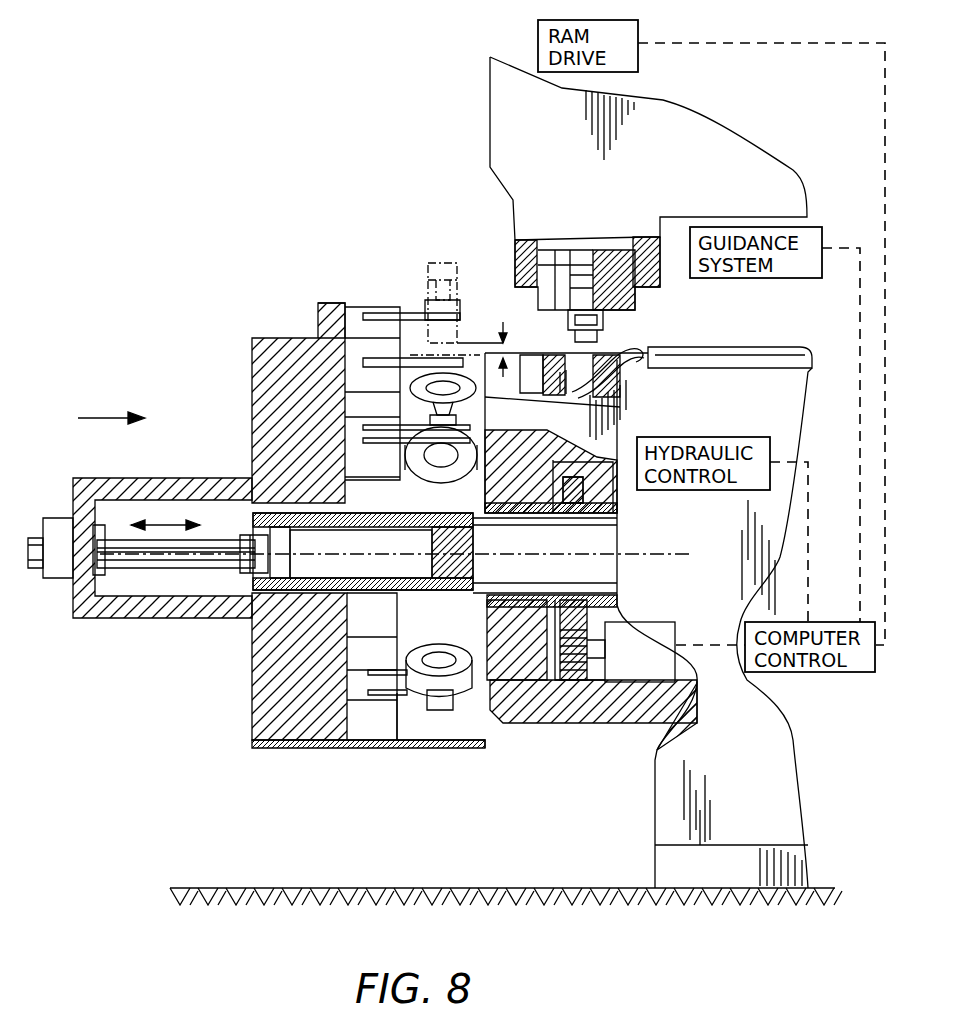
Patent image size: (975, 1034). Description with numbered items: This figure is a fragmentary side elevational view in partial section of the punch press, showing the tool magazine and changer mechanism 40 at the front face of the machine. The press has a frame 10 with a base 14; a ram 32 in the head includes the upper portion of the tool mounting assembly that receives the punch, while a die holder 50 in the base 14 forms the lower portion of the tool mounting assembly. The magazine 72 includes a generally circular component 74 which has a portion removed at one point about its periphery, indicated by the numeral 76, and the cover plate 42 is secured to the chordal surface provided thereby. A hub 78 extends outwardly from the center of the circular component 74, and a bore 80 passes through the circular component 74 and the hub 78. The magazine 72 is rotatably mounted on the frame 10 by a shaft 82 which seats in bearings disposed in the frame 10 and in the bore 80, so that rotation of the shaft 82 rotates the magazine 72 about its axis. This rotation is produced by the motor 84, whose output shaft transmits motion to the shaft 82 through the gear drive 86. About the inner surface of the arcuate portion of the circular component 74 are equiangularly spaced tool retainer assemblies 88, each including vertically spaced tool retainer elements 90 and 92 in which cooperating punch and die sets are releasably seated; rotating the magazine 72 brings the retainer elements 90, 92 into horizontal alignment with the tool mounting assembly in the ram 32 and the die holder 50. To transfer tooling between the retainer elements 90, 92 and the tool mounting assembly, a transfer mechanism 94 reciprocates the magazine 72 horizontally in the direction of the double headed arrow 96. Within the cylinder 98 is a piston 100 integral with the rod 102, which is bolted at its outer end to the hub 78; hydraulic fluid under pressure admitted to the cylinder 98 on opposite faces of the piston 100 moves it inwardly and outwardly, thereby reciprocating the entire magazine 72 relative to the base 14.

The frame 10 is at (604, 787).
The bifurcated base 14 is at (757, 817).
The ram 32 is at (635, 297).
The tool magazine and changer mechanism 40 is at (250, 670).
The cover plate 42 is at (425, 750).
The die holder 50 is at (640, 352).
The magazine 72 is at (252, 360).
The generally circular component 74 is at (320, 303).
The removed portion 76 is at (285, 732).
The hub 78 is at (170, 622).
The bore 80 is at (133, 568).
The shaft 82 is at (610, 537).
The motor 84 is at (640, 640).
The gear drive 86 is at (568, 682).
The tool retainer assemblies 88 is at (400, 748).
The tool retainer element 90 is at (410, 318).
The tool retainer element 92 is at (380, 366).
The transfer mechanism 94 is at (208, 568).
The double headed arrow 96 is at (173, 522).
The cylinder 98 is at (365, 540).
The piston 100 is at (250, 547).
The rod 102 is at (108, 618).